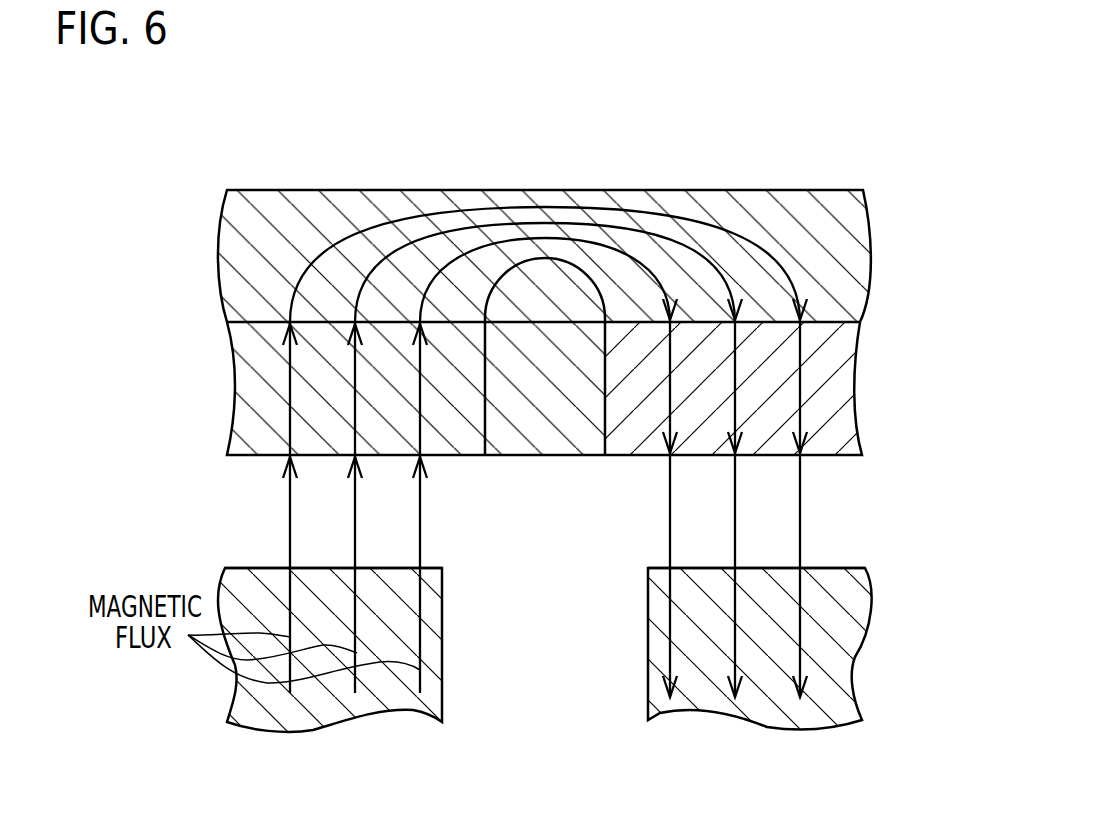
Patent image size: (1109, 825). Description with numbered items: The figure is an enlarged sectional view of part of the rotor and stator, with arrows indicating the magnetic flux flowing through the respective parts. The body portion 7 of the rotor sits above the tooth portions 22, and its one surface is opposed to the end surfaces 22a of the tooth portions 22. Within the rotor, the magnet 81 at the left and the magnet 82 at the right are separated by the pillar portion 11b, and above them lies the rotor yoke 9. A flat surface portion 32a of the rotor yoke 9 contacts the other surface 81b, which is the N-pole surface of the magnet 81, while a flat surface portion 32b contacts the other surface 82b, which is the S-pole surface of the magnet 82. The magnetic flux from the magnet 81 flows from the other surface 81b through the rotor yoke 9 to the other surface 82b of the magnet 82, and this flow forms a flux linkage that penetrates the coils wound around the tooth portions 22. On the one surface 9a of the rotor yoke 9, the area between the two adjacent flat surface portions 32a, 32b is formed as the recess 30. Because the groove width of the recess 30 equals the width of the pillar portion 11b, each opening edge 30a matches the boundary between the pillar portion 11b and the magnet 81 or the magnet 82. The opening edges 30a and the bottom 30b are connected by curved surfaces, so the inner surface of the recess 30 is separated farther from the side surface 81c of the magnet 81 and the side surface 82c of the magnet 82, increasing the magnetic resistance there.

The body portion 7 is at (858, 415).
The rotor yoke 9 is at (829, 189).
The one surface of the rotor yoke 9a is at (268, 326).
The pillar portion 11b is at (582, 437).
The tooth portion 22 is at (335, 697).
The end surface 22a is at (258, 568).
The recess 30 is at (560, 282).
The opening edge 30a is at (600, 322).
The bottom 30b is at (537, 262).
The flat surface portion 32a is at (245, 322).
The flat surface portion 32b is at (843, 322).
The magnet 81 is at (260, 460).
The other surface 81b is at (261, 322).
The side surface 81c is at (493, 415).
The magnet 82 is at (829, 460).
The other surface 82b is at (832, 322).
The side surface 82c is at (598, 417).